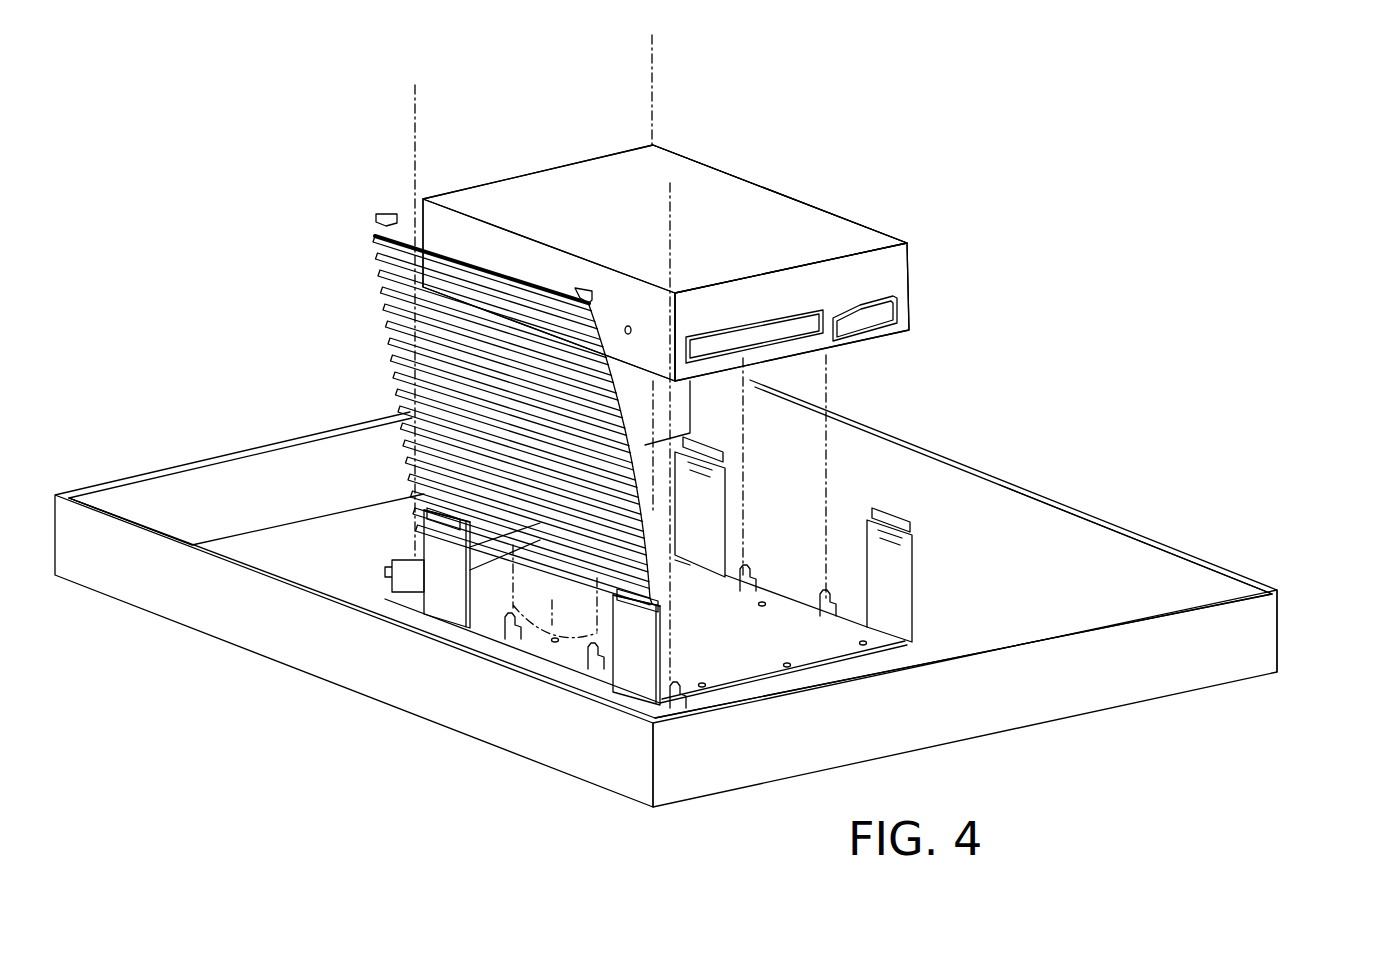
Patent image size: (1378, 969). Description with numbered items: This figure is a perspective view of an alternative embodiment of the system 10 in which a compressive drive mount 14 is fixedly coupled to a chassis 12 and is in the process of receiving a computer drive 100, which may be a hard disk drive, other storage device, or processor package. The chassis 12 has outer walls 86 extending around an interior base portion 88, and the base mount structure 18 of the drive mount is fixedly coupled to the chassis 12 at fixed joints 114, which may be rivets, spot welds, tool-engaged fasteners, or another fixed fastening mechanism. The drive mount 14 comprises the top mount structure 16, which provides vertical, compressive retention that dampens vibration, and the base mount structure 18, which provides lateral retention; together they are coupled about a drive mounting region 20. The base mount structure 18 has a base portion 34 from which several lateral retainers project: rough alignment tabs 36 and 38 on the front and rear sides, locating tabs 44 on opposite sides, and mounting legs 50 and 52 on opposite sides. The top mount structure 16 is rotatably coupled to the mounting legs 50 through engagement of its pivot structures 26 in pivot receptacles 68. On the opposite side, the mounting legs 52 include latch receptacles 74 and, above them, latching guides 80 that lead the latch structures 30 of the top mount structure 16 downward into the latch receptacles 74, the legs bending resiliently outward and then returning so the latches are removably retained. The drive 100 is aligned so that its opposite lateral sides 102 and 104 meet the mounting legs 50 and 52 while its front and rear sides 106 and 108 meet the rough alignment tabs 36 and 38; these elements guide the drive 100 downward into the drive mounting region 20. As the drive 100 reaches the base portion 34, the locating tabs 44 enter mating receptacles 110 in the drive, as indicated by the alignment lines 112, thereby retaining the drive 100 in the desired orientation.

The electronic system 10 is at (1077, 245).
The chassis 12 is at (1247, 560).
The compressive drive mount 14 is at (363, 513).
The top mount structure 16 is at (375, 347).
The base mount structure 18 is at (337, 549).
The drive mounting region 20 is at (830, 651).
The pivot structures 26 is at (427, 535).
The latch structures 30 is at (385, 203).
The base portion 34 is at (743, 668).
The rough alignment tab 36 is at (400, 590).
The rough alignment tab 38 is at (670, 693).
The locating tabs 44 is at (750, 578).
The mounting legs 50 is at (442, 618).
The mounting legs 52 is at (717, 528).
The pivot receptacles 68 is at (427, 508).
The latch receptacles 74 is at (700, 480).
The latching guides 80 is at (710, 431).
The outer walls 86 is at (1280, 627).
The interior base portion 88 is at (1062, 620).
The computer drive 100 is at (830, 207).
The lateral side 102 is at (522, 248).
The lateral side 104 is at (787, 162).
The front side 106 is at (500, 180).
The rear side 108 is at (902, 272).
The mating receptacles 110 is at (835, 353).
The alignment lines 112 is at (836, 393).
The fixed joints 114 is at (762, 610).